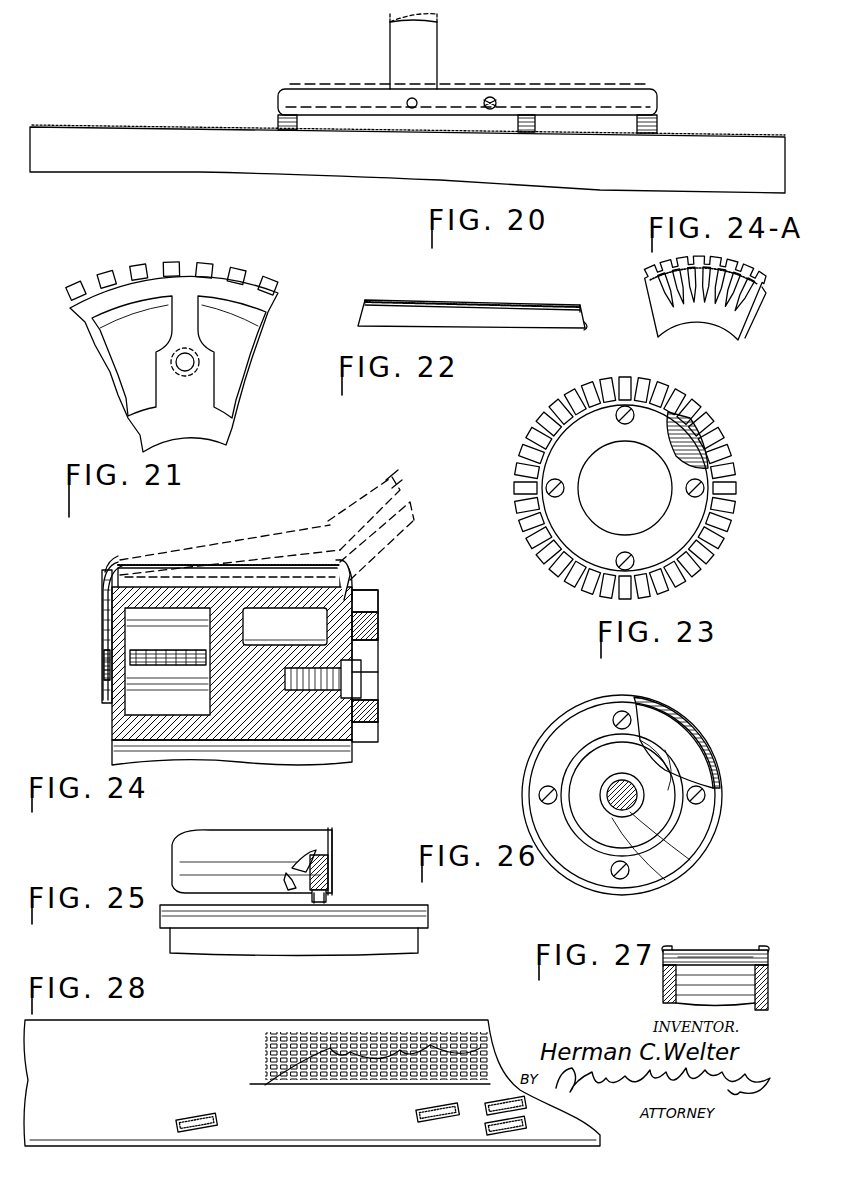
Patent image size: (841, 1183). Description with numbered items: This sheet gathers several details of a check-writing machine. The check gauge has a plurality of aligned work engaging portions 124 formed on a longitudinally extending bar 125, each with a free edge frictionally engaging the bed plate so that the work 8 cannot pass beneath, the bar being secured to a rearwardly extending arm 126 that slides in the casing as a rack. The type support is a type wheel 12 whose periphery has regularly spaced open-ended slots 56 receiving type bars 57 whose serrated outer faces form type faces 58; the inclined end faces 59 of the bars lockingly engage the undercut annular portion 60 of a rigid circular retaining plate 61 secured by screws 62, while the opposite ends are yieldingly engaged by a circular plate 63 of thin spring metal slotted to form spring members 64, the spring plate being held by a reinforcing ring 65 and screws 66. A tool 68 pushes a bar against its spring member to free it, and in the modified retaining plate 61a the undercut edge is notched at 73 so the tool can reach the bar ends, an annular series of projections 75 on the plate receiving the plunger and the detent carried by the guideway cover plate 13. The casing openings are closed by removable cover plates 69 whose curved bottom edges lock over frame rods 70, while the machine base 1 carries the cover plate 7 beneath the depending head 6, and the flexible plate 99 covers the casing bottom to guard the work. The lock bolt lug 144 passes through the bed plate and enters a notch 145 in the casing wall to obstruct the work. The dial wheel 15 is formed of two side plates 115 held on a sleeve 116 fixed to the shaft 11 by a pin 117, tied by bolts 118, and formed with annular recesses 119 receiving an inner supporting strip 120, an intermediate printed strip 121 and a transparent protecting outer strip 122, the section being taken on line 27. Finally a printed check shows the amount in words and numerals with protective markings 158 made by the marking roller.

In FIG. 20, the work 8 is at (652, 182).
In FIG. 28, the work 8 is at (312, 1070).
In FIG. 20, the work engaging portions 124 is at (288, 129).
In FIG. 20, the longitudinally extending bar 125 is at (582, 104).
In FIG. 20, the rearwardly extending arm 126 is at (427, 73).
In FIG. 21, the type wheel 12 is at (102, 366).
In FIG. 24, the type wheel 12 is at (275, 746).
In FIG. 21, the slots 56 is at (246, 270).
In FIG. 24, the slots 56 is at (272, 612).
In FIG. 22, the type bars 57 is at (500, 320).
In FIG. 24, the type bars 57 is at (250, 548).
In FIG. 22, the type faces 58 is at (470, 305).
In FIG. 24, the type faces 58 is at (176, 564).
In FIG. 22, the end faces 59 is at (360, 316).
In FIG. 24, the end faces 59 is at (128, 566).
In FIG. 24-A, the notches 73 is at (736, 280).
In FIG. 24-A, the projections 75 is at (718, 296).
In FIG. 24, the projections 75 is at (380, 612).
In FIG. 24-A, the rigid type bar retaining plate 61a is at (732, 332).
In FIG. 23, the circular plate of thin spring metal 63 is at (682, 448).
In FIG. 24, the circular plate of thin spring metal 63 is at (130, 690).
In FIG. 23, the spring members 64 is at (722, 440).
In FIG. 24, the spring members 64 is at (102, 592).
In FIG. 23, the reinforcing ring 65 is at (680, 510).
In FIG. 24, the reinforcing ring 65 is at (103, 688).
In FIG. 23, the screws 66 is at (566, 490).
In FIG. 24, the screws 66 is at (150, 660).
In FIG. 24, the tool 68 is at (398, 482).
In FIG. 24, the undercut annular portion 60 is at (372, 570).
In FIG. 24, the rigid circular retaining plate 61 is at (380, 628).
In FIG. 24, the screws 62 is at (362, 678).
In FIG. 25, the removable cover plates 69 is at (252, 861).
In FIG. 25, the frame rods 70 is at (238, 850).
In FIG. 25, the depending head 6 is at (332, 850).
In FIG. 25, the guideway cover plate 13 is at (330, 868).
In FIG. 25, the notch 145 is at (330, 880).
In FIG. 25, the lug 144 is at (334, 906).
In FIG. 25, the flexible plate 99 is at (300, 892).
In FIG. 25, the machine base 1 is at (322, 945).
In FIG. 25, the cover plate 7 is at (265, 928).
In FIG. 26, the section line 27 is at (598, 712).
In FIG. 26, the inner supporting strip 120 is at (660, 702).
In FIG. 27, the inner supporting strip 120 is at (680, 1004).
In FIG. 26, the intermediate strip 121 is at (690, 712).
In FIG. 27, the intermediate strip 121 is at (716, 950).
In FIG. 26, the protecting outer strip 122 is at (700, 730).
In FIG. 27, the protecting outer strip 122 is at (737, 952).
In FIG. 26, the side plates 115 is at (688, 746).
In FIG. 27, the side plates 115 is at (664, 986).
In FIG. 26, the dial wheel 15 is at (722, 824).
In FIG. 26, the shaft 11 is at (636, 808).
In FIG. 26, the sleeve 116 is at (648, 812).
In FIG. 26, the pin 117 is at (636, 822).
In FIG. 26, the annular recesses 119 is at (580, 886).
In FIG. 27, the annular recesses 119 is at (676, 938).
In FIG. 26, the bolts 118 is at (625, 878).
In FIG. 28, the markings 158 is at (395, 1040).